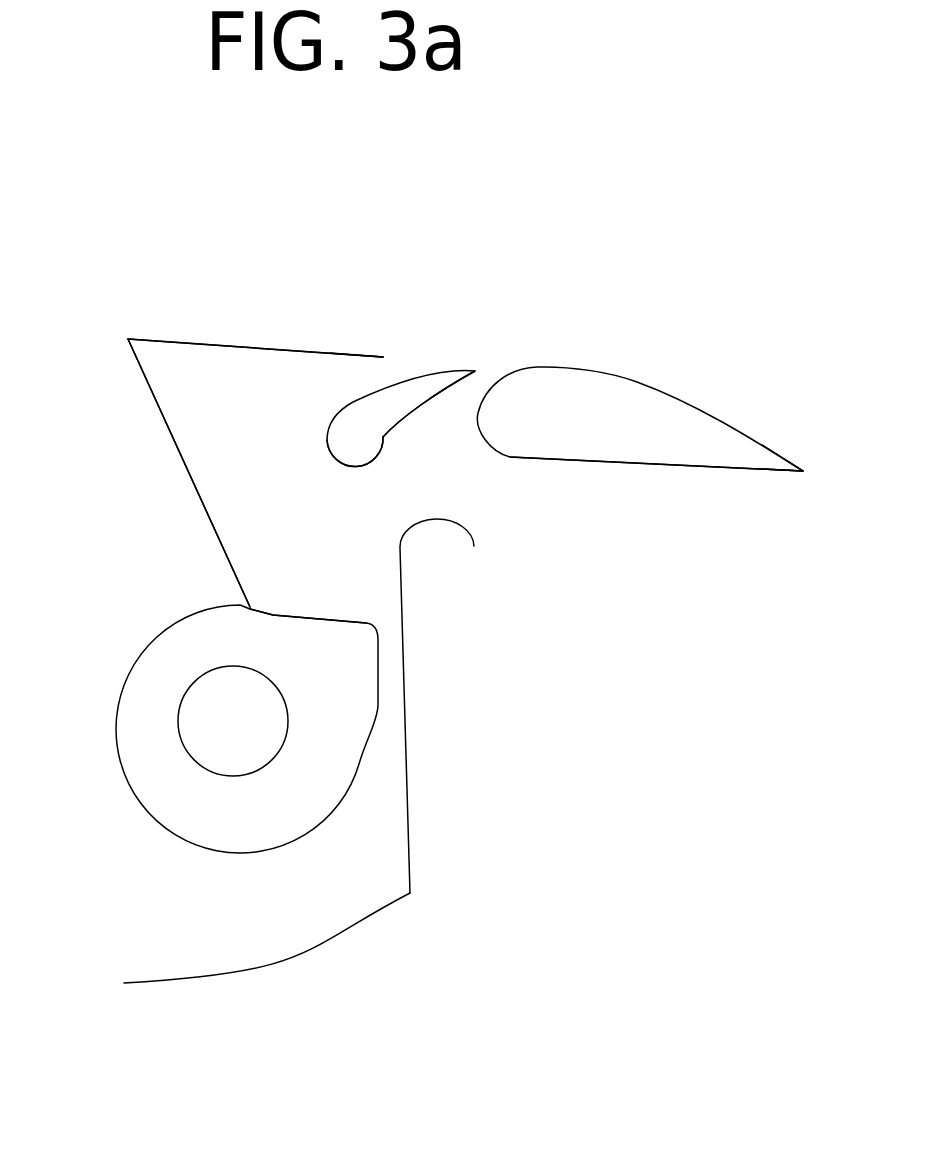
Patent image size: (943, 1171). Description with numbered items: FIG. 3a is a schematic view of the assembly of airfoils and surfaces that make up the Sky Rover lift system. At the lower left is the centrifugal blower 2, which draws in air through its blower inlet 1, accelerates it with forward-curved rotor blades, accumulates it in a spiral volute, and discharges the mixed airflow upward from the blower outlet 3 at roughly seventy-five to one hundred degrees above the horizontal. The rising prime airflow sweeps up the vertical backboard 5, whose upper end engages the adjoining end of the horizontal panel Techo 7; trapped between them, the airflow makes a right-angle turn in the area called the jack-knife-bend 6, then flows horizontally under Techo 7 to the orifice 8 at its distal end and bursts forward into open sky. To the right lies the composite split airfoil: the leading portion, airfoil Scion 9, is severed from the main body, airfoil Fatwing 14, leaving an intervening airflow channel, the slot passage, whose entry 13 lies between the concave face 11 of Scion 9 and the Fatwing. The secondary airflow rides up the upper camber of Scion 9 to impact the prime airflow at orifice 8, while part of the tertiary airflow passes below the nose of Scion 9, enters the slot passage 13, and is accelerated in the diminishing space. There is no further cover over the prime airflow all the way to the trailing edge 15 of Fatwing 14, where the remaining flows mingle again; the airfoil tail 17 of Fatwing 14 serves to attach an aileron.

The blower inlet 1 is at (217, 684).
The blower 2 is at (153, 753).
The blower outlet 3 is at (277, 615).
The backboard 5 is at (172, 440).
The jack-knife-bend 6 is at (255, 473).
The Techo 7 is at (267, 346).
The orifice at Techo end 8 is at (392, 367).
The upper camber of airfoil Scion 9 is at (343, 403).
The concave face of airfoil Scion in slot passage 11 is at (388, 443).
The entry into slot passage 13 is at (443, 427).
The upper camber of airfoil Fatwing 14 is at (633, 382).
The trailing edge of airfoil Fatwing 15 is at (777, 473).
The airfoil tail 17 is at (802, 467).